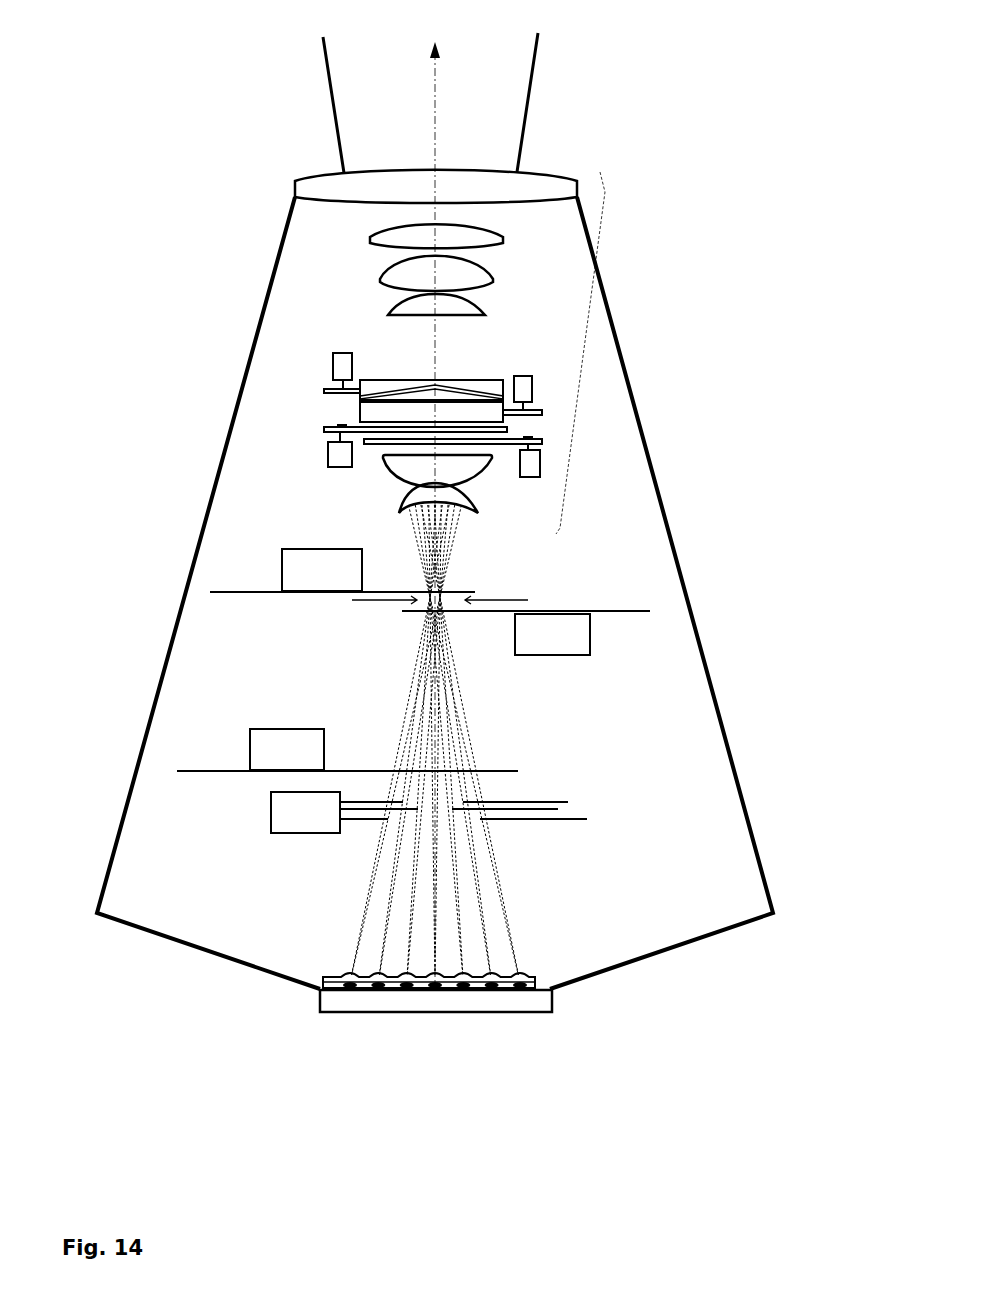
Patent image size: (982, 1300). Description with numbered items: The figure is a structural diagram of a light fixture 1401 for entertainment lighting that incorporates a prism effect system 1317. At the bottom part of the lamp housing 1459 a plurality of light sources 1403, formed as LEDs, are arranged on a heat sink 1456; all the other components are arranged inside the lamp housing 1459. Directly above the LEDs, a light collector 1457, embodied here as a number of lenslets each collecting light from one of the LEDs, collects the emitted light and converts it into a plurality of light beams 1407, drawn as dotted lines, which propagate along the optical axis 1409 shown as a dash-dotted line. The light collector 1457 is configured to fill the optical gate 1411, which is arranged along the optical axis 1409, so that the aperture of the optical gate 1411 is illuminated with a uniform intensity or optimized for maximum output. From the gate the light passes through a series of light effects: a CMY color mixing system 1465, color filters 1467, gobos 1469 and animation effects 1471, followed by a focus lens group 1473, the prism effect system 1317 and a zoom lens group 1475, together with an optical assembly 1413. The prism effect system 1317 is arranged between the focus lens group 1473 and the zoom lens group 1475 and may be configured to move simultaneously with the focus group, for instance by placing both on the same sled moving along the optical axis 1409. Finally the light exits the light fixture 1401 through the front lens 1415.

The light fixture 1401 is at (437, 511).
The optical axis 1409 is at (437, 78).
The front lens 1415 is at (356, 183).
The zoom lens group 1475 is at (352, 263).
The prism effect system 1317 is at (289, 400).
The focus lens group 1473 is at (394, 479).
The optical assembly 1413 is at (611, 353).
The lamp housing 1459 is at (605, 287).
The optical gate 1411 is at (481, 597).
The animation effects 1471 is at (342, 570).
The gobos 1469 is at (526, 633).
The color filters 1467 is at (347, 750).
The CMY color mixing system 1465 is at (429, 812).
The light beams 1407 is at (440, 725).
The heat sink 1456 is at (353, 1013).
The light sources 1403 is at (457, 990).
The light collector 1457 is at (513, 989).